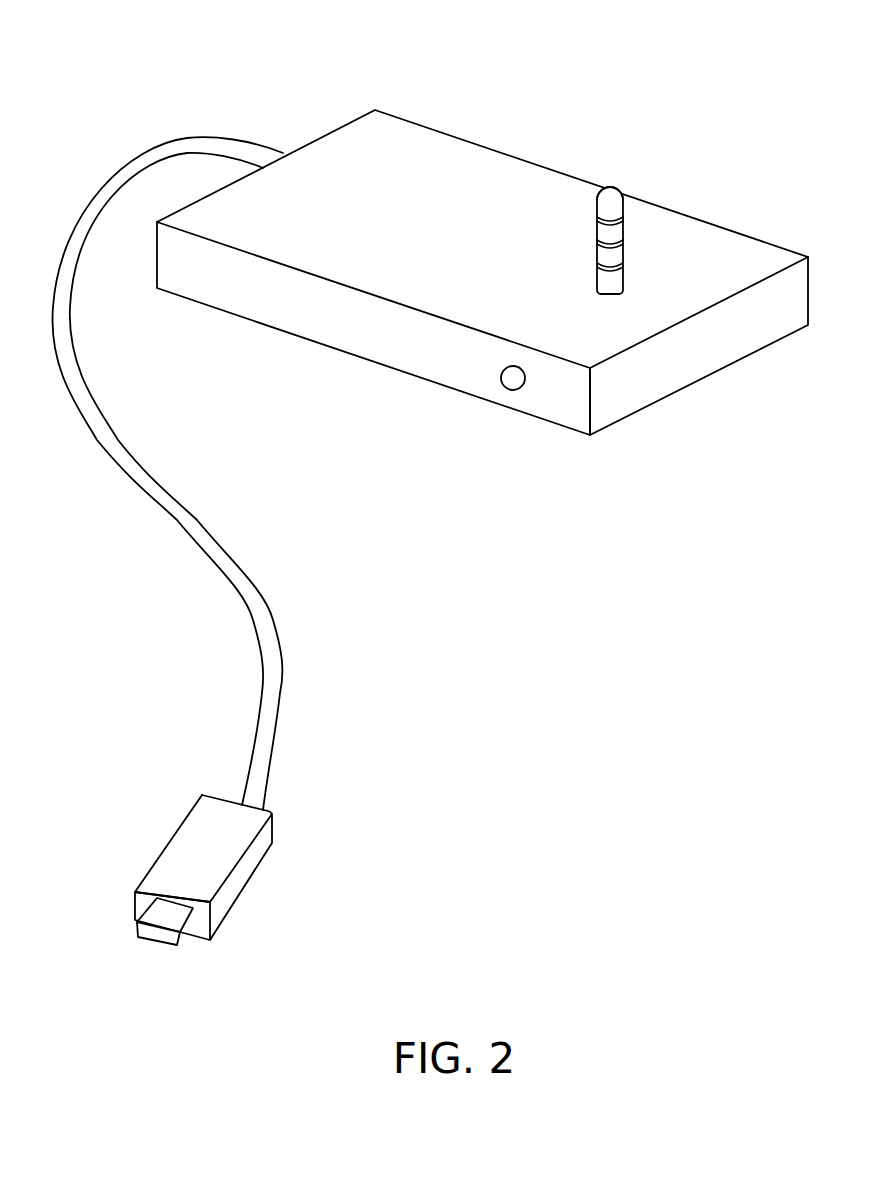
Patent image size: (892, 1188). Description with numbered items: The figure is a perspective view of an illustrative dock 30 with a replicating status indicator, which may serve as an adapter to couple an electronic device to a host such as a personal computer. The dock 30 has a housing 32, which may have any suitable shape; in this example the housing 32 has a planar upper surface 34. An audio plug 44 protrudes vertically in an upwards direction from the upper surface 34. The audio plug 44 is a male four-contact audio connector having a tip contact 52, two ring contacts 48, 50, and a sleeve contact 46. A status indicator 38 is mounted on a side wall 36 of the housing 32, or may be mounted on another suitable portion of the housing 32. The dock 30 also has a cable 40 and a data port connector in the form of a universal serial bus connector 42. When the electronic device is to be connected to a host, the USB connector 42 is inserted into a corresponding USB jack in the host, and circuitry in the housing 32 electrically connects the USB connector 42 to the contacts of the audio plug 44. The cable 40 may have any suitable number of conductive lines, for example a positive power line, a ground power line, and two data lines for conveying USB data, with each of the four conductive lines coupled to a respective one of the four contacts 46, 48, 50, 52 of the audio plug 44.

The dock 30 is at (733, 60).
The housing 32 is at (780, 338).
The planar upper surface 34 is at (685, 255).
The side wall 36 is at (448, 370).
The status indicator 38 is at (513, 390).
The cable 40 is at (262, 640).
The universal serial bus (USB) connector 42 is at (262, 892).
The audio plug 44 is at (592, 185).
The sleeve contact 46 is at (622, 278).
The ring contact 48 is at (620, 257).
The ring contact 50 is at (620, 236).
The tip contact 52 is at (610, 190).